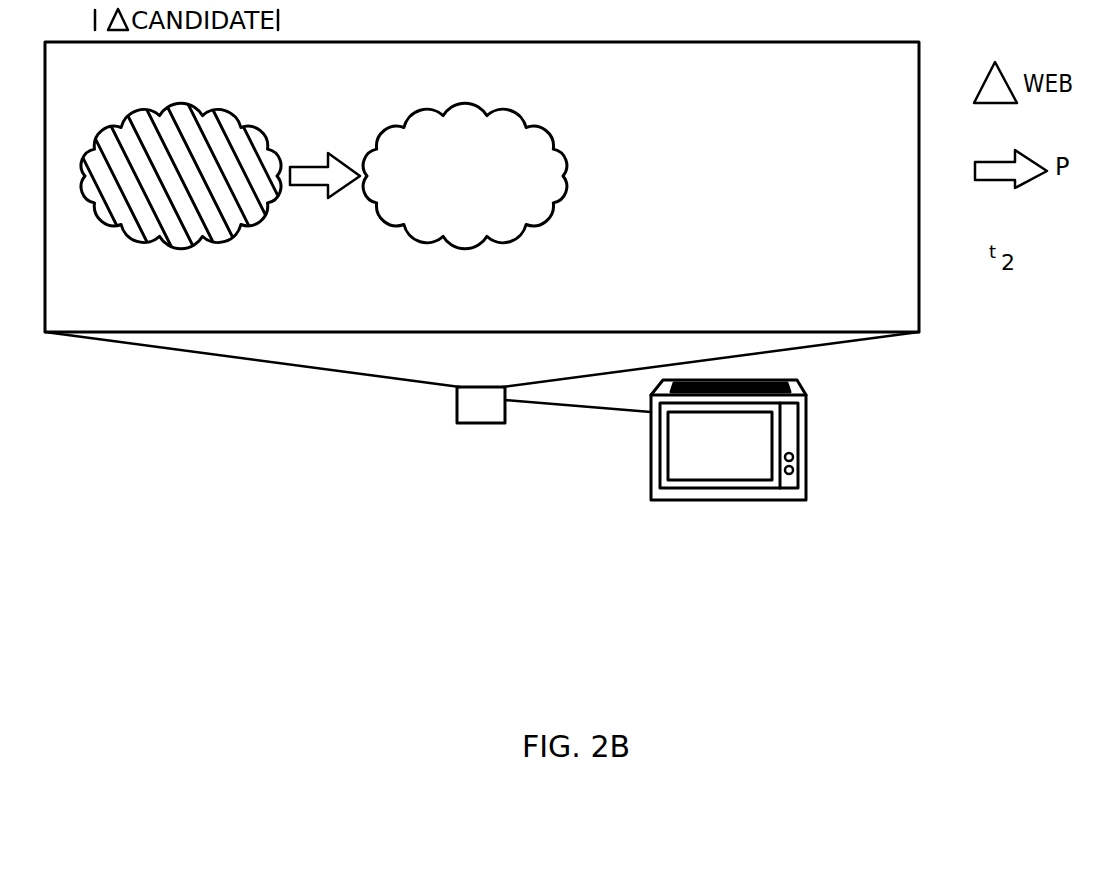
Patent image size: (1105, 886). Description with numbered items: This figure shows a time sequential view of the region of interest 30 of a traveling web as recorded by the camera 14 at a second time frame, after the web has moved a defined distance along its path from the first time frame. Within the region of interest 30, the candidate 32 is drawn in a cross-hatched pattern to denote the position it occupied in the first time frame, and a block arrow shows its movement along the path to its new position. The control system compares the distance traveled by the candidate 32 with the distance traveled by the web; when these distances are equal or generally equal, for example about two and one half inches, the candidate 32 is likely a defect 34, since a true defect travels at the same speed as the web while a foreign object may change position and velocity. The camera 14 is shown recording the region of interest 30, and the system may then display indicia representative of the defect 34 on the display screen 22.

The camera 14 is at (482, 377).
The display screen 22 is at (707, 473).
The region of interest 30 is at (774, 178).
The candidate 32 is at (185, 186).
The defect 34 is at (465, 176).